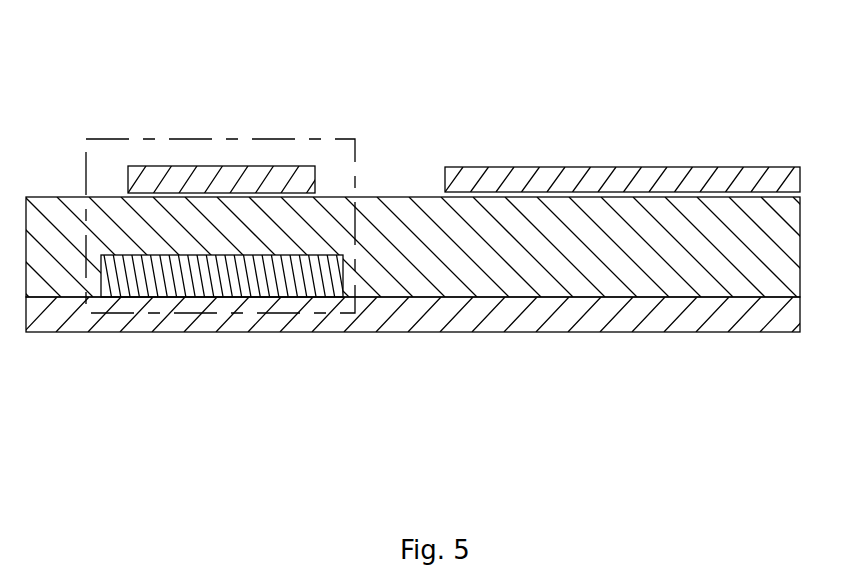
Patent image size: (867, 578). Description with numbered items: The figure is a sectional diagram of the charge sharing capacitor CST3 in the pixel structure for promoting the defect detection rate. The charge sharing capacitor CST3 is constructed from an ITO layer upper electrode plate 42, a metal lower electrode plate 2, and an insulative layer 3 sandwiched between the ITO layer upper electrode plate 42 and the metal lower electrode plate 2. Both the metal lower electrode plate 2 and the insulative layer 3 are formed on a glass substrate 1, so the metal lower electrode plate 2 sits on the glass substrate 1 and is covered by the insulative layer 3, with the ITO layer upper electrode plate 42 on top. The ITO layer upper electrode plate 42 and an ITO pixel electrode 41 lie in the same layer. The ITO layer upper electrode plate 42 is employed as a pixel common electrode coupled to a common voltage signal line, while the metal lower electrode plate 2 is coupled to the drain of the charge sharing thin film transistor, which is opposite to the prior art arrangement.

The glass substrate 1 is at (523, 312).
The metal lower electrode plate 2 is at (317, 280).
The insulative layer 3 is at (655, 255).
The ITO pixel electrode 41 is at (630, 178).
The ITO layer upper electrode plate 42 is at (217, 185).
The charge sharing capacitor CST3 is at (152, 139).